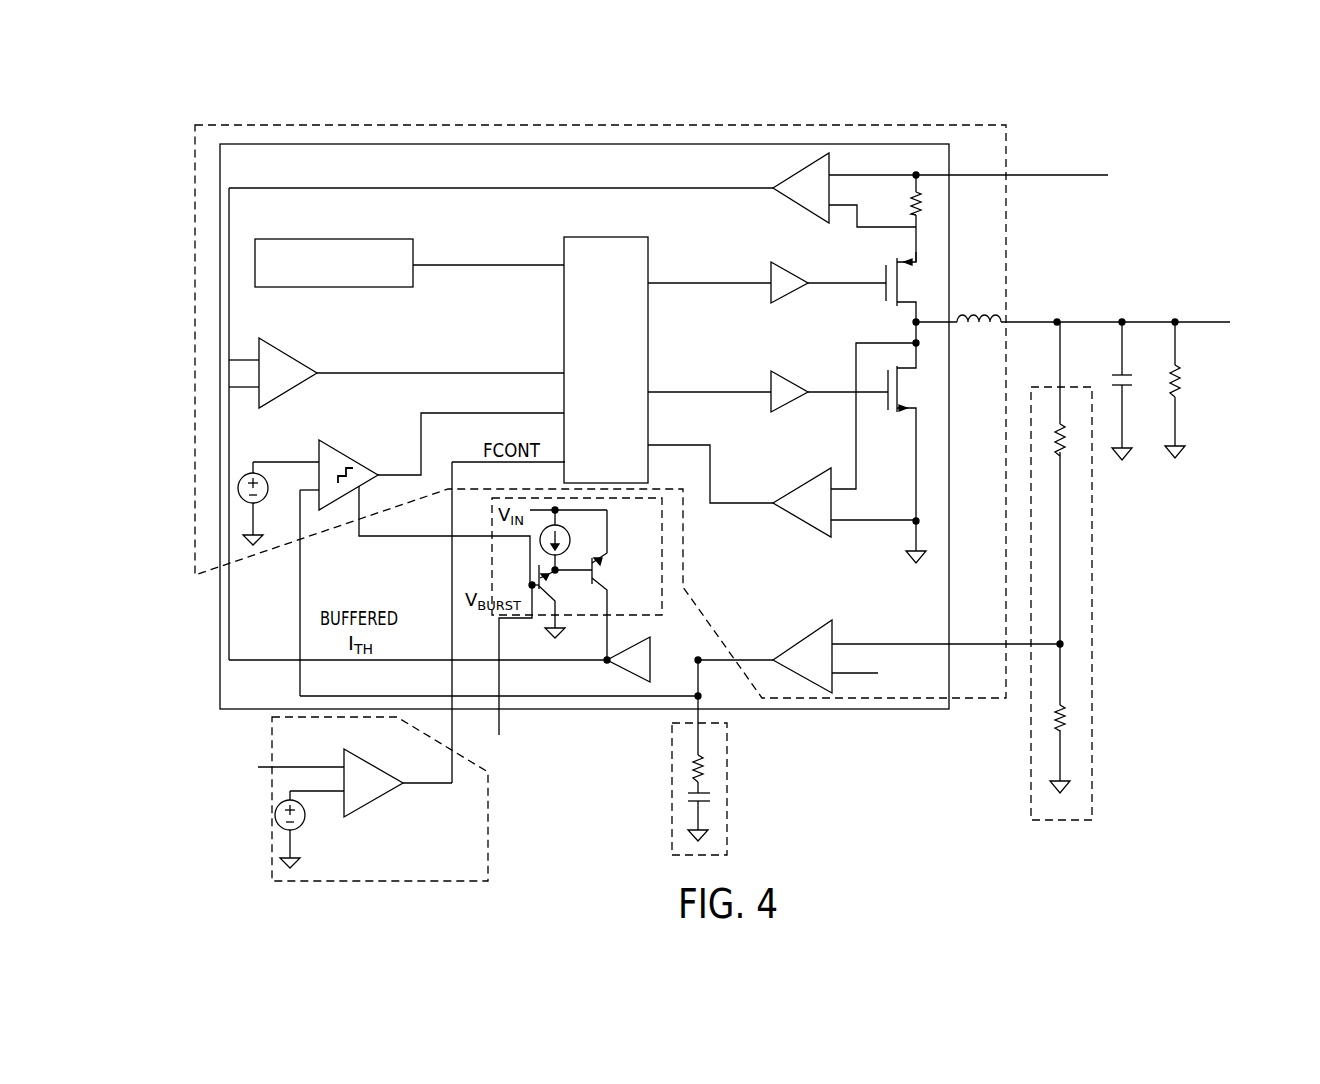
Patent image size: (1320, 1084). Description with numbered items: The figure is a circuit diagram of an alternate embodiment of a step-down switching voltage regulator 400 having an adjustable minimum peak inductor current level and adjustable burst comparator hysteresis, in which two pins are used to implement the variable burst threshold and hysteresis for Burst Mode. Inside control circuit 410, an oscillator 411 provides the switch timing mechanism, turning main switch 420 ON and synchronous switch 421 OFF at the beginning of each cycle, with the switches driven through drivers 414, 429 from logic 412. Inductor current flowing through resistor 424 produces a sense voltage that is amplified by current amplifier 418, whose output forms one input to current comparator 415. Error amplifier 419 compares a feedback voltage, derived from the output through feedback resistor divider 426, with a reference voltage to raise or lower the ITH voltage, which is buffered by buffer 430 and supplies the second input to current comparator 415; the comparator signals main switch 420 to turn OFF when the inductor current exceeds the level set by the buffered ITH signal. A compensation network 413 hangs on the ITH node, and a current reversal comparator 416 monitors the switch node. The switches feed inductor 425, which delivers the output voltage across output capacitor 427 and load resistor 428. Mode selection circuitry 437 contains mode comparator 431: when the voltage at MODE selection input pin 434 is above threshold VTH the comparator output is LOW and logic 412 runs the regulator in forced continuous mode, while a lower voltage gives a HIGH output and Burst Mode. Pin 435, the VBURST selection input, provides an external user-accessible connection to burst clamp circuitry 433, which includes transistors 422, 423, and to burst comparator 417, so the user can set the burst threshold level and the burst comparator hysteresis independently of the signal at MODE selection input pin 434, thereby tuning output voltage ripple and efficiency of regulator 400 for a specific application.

The regulator 400 is at (1168, 93).
The control circuit 410 is at (878, 123).
The oscillator 411 is at (325, 239).
The logic 412 is at (619, 388).
The compensation network 413 is at (728, 777).
The driver 414 is at (807, 268).
The current comparator 415 is at (288, 353).
The current reversal comparator 416 is at (803, 482).
The burst comparator 417 is at (362, 463).
The current amplifier 418 is at (790, 180).
The error amplifier 419 is at (793, 643).
The main switch 420 is at (918, 283).
The synchronous switch 421 is at (917, 388).
The transistor 422 is at (543, 573).
The transistor 423 is at (602, 570).
The resistor 424 is at (930, 205).
The inductor 425 is at (987, 307).
The feedback resistor divider 426 is at (1092, 571).
The output capacitor 427 is at (1121, 373).
The load resistor 428 is at (1194, 385).
The driver 429 is at (808, 378).
The buffer 430 is at (637, 673).
The mode comparator 431 is at (362, 817).
The burst clamp circuitry 433 is at (513, 625).
The MODE selection input pin 434 is at (278, 751).
The VBURST selection input pin 435 is at (500, 748).
The mode selection circuitry 437 is at (381, 799).